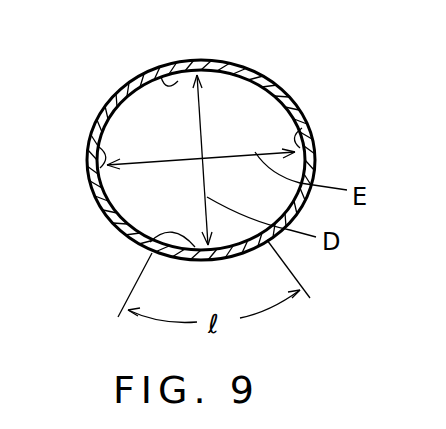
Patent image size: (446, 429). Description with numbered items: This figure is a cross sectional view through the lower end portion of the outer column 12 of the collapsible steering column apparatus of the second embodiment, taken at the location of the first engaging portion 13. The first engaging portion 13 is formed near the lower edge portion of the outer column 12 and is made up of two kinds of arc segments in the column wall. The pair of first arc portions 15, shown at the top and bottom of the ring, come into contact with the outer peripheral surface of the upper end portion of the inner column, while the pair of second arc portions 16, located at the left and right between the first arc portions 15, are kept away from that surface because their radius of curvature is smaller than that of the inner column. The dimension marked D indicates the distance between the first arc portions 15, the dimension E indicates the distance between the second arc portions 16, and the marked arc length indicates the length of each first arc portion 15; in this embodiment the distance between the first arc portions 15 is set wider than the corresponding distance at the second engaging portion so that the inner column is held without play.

The outer column 12 is at (250, 144).
The first engaging portion 13 is at (243, 72).
The first arc portions 15 is at (157, 77).
The second arc portions 16 is at (104, 150).